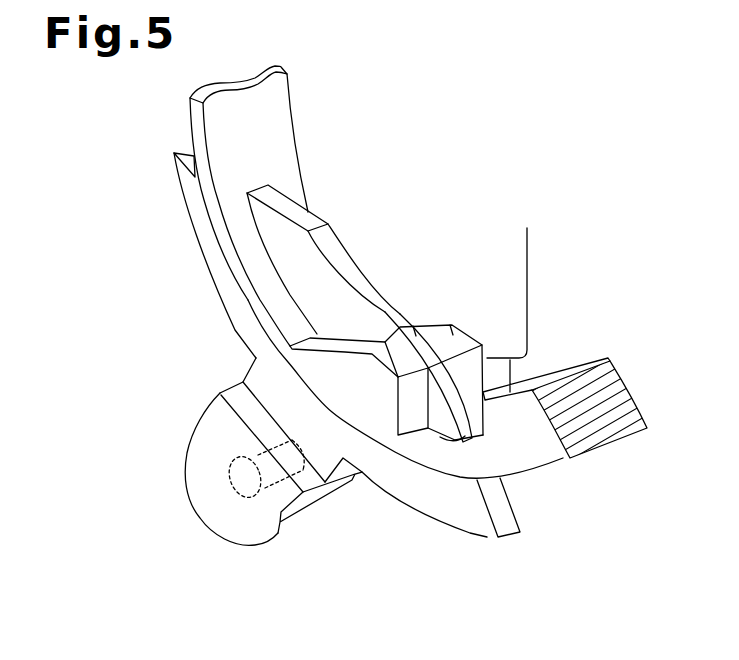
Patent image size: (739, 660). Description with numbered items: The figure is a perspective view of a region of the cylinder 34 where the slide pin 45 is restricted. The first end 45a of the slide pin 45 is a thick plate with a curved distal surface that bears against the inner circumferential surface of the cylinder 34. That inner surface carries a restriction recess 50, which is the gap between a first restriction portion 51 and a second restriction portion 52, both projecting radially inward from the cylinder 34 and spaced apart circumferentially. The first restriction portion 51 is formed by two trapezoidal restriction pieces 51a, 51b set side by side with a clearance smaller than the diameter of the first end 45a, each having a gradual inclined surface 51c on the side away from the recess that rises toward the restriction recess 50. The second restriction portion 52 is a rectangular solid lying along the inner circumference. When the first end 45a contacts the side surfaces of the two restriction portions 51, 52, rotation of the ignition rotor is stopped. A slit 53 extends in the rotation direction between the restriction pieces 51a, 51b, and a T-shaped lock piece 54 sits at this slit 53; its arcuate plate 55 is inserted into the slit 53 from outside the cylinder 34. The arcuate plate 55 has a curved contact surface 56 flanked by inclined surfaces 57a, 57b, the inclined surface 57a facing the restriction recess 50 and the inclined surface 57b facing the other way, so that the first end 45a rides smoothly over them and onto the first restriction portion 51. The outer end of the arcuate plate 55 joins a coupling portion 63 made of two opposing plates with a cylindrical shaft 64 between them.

The cylinder 34 is at (530, 478).
The slide pin 45 is at (528, 269).
The first end 45a is at (548, 360).
The restriction recess 50 is at (485, 355).
The first restriction portion 51 is at (510, 254).
The restriction piece 51a is at (455, 320).
The restriction piece 51b is at (420, 322).
The inclined surface 51c is at (396, 316).
The second restriction portion 52 is at (572, 367).
The slit 53 is at (416, 440).
The lock piece 54 is at (386, 498).
The arcuate plate 55 is at (303, 240).
The contact surface 56 is at (355, 268).
The inclined surface 57a is at (485, 430).
The inclined surface 57b is at (287, 200).
The coupling portion 63 is at (316, 506).
The cylindrical shaft 64 is at (270, 496).